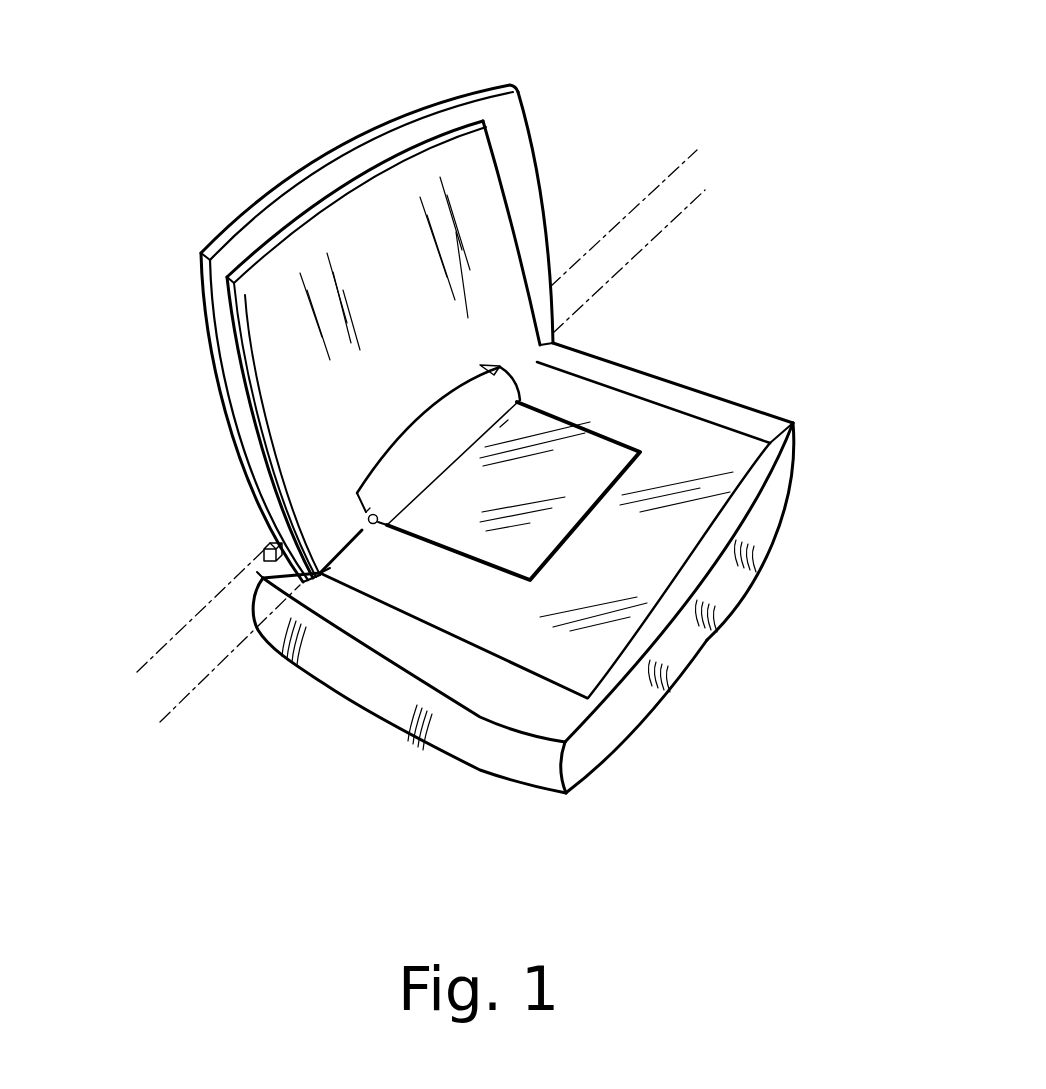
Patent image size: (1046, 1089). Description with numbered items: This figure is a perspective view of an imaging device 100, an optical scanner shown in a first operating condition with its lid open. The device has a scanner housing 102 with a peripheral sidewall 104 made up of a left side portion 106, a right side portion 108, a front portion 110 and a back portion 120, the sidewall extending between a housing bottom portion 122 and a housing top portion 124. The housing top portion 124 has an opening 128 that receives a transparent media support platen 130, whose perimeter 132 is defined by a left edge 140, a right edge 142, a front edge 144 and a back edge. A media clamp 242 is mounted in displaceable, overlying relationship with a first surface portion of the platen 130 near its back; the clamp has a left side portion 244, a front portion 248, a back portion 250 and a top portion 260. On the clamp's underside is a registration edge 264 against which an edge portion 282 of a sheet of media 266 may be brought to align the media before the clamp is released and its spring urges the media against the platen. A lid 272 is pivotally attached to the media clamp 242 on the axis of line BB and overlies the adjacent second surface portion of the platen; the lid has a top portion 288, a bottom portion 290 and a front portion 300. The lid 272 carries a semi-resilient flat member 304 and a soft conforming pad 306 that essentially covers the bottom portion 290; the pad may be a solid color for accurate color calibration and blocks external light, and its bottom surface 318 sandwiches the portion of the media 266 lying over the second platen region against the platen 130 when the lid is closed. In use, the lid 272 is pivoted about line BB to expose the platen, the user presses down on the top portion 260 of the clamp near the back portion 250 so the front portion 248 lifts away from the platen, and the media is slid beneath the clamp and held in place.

The imaging device 100 is at (584, 186).
The scanner housing 102 is at (680, 365).
The peripheral sidewall 104 is at (520, 810).
The left side portion 106 is at (453, 745).
The right side portion 108 is at (757, 408).
The front portion 110 is at (652, 686).
The back portion 120 is at (257, 572).
The housing bottom portion 122 is at (608, 750).
The housing top portion 124 is at (696, 398).
The opening 128 is at (771, 443).
The transparent media support platen 130 is at (588, 555).
The perimeter 132 is at (757, 466).
The left edge 140 is at (376, 535).
The right edge 142 is at (645, 398).
The front edge 144 is at (712, 530).
The media clamp 242 is at (406, 478).
The left side portion 244 is at (262, 550).
The front portion 248 is at (503, 428).
The back portion 250 is at (272, 542).
The top portion 260 is at (429, 442).
The registration edge 264 is at (473, 643).
The sheet of media 266 is at (486, 497).
The lid 272 is at (452, 74).
The edge portion 282 is at (562, 560).
The top portion 288 is at (257, 200).
The bottom portion 290 is at (480, 177).
The front portion 300 is at (352, 137).
The semi-resilient flat member 304 is at (341, 172).
The soft conforming pad 306 is at (369, 320).
The bottom surface 318 is at (480, 230).